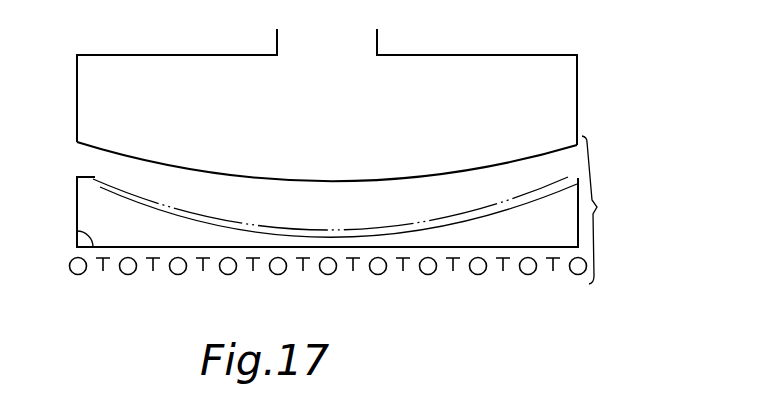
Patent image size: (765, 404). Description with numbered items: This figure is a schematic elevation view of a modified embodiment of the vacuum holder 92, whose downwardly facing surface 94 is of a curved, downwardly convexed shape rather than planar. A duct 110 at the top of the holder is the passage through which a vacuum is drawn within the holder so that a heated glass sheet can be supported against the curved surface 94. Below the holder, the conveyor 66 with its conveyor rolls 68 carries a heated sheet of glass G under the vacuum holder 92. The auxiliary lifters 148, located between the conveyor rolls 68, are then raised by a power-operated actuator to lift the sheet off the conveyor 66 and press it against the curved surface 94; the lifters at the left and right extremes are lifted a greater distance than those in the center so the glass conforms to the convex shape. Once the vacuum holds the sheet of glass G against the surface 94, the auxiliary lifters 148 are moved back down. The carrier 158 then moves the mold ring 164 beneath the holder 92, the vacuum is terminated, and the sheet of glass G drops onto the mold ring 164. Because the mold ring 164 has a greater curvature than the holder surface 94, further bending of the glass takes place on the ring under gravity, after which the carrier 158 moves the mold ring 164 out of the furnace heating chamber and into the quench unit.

The vacuum holder 92 is at (586, 108).
The downwardly facing surface 94 is at (208, 175).
The duct 110 is at (378, 41).
The carrier 158 is at (78, 231).
The sheet of glass G is at (290, 230).
The mold ring 164 is at (513, 198).
The conveyor rolls 68 is at (382, 274).
The auxiliary lifters 148 is at (503, 272).
The conveyor 66 is at (66, 271).